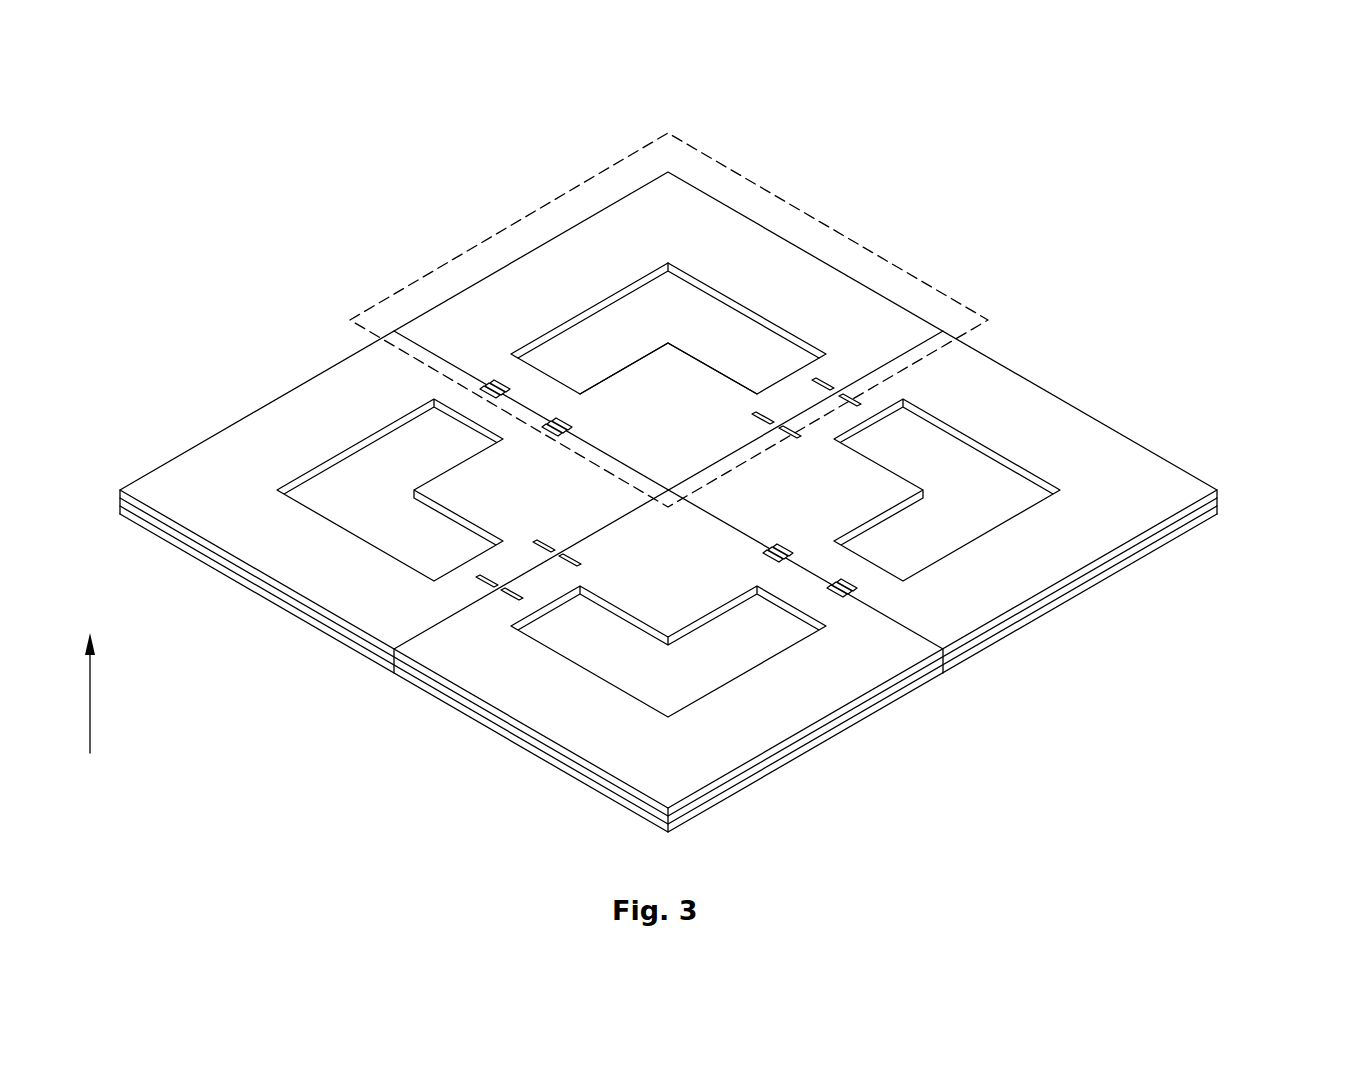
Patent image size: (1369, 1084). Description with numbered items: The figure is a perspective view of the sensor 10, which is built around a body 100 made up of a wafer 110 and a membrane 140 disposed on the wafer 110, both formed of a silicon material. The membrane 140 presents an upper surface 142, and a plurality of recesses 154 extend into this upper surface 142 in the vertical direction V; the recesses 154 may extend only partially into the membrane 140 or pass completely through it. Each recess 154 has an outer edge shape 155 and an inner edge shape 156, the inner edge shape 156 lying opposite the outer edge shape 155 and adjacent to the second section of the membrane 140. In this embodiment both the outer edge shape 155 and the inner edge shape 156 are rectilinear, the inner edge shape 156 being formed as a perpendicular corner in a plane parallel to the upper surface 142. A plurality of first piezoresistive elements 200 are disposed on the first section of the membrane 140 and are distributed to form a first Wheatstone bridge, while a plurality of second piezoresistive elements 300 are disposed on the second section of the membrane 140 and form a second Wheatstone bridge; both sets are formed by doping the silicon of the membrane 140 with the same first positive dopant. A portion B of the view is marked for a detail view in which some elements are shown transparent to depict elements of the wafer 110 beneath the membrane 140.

The sensor 10 is at (1262, 108).
The body 100 is at (723, 502).
The wafer 110 is at (1088, 583).
The membrane 140 is at (1145, 518).
The upper surface 142 is at (1137, 470).
The recess 154 is at (661, 260).
The outer edge shape 155 is at (565, 330).
The inner edge shape 156 is at (735, 380).
The first piezoresistive element 200 is at (492, 383).
The second piezoresistive element 300 is at (557, 418).
The portion B is at (718, 162).
The vertical direction V is at (76, 691).